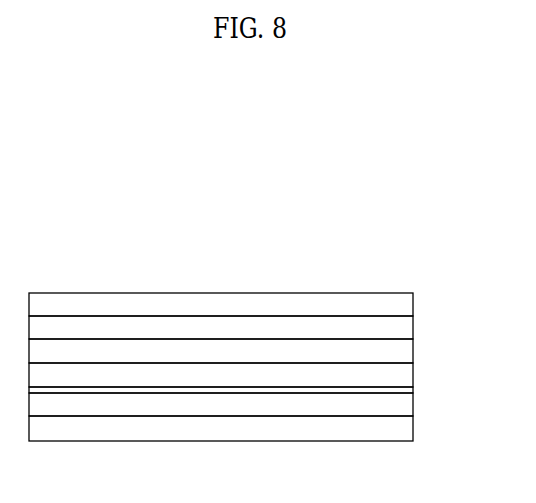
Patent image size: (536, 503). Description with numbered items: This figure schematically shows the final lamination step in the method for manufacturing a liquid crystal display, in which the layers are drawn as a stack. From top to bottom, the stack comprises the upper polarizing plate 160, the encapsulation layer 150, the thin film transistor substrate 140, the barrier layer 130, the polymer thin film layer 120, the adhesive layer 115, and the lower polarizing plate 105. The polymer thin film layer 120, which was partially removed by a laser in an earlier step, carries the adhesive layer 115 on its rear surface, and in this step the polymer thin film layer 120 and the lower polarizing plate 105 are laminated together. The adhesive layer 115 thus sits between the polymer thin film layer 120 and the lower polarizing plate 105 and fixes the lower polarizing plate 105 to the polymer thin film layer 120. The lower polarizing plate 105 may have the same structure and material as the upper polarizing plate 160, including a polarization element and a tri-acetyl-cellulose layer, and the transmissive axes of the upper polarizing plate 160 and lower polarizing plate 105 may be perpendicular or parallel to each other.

The upper polarizing plate 160 is at (413, 293).
The encapsulation layer 150 is at (413, 318).
The thin film transistor substrate 140 is at (413, 340).
The barrier layer 130 is at (411, 370).
The polymer thin film layer 120 is at (413, 390).
The adhesive layer 115 is at (411, 408).
The lower polarizing plate 105 is at (413, 437).